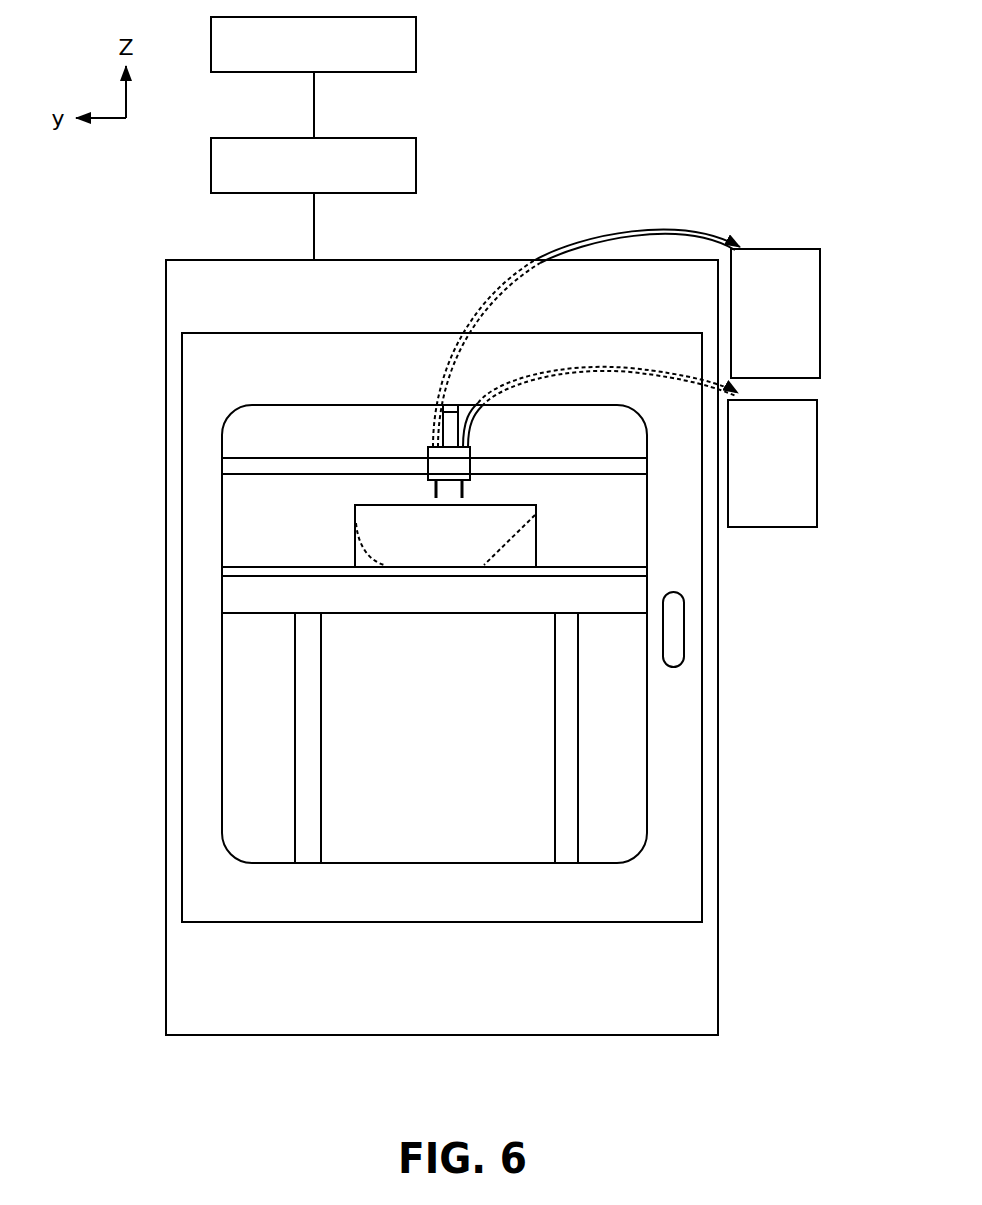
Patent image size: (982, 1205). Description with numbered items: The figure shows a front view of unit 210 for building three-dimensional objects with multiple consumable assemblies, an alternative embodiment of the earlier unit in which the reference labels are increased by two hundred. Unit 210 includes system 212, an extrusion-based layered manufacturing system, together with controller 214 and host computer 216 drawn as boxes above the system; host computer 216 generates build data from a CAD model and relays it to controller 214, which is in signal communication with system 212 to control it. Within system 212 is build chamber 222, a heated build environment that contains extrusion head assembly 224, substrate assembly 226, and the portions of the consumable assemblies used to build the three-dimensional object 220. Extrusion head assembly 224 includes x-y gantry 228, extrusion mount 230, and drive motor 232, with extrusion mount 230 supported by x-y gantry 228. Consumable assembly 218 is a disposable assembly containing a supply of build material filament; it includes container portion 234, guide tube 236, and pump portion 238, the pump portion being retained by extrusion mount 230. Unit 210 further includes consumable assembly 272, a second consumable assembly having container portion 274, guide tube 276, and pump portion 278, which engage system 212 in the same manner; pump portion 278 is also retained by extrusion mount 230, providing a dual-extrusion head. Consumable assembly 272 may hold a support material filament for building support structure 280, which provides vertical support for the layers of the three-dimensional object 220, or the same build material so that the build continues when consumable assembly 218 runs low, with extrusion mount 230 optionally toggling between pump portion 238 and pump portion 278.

The unit 210 is at (660, 100).
The system 212 is at (160, 260).
The controller 214 is at (417, 150).
The host computer 216 is at (417, 28).
The consumable assembly 218 is at (800, 580).
The 3D object 220 is at (438, 535).
The build chamber 222 is at (640, 764).
The extrusion head assembly 224 is at (424, 453).
The substrate assembly 226 is at (252, 600).
The x-y gantry 228 is at (259, 469).
The extrusion mount 230 is at (430, 478).
The drive motor 232 is at (452, 407).
The container portion 234 is at (767, 530).
The guide tube 236 is at (625, 368).
The pump portion 238 is at (484, 442).
The consumable assembly 272 is at (787, 210).
The container portion 274 is at (812, 297).
The guide tube 276 is at (622, 228).
The pump portion 278 is at (425, 440).
The support structure 280 is at (355, 557).